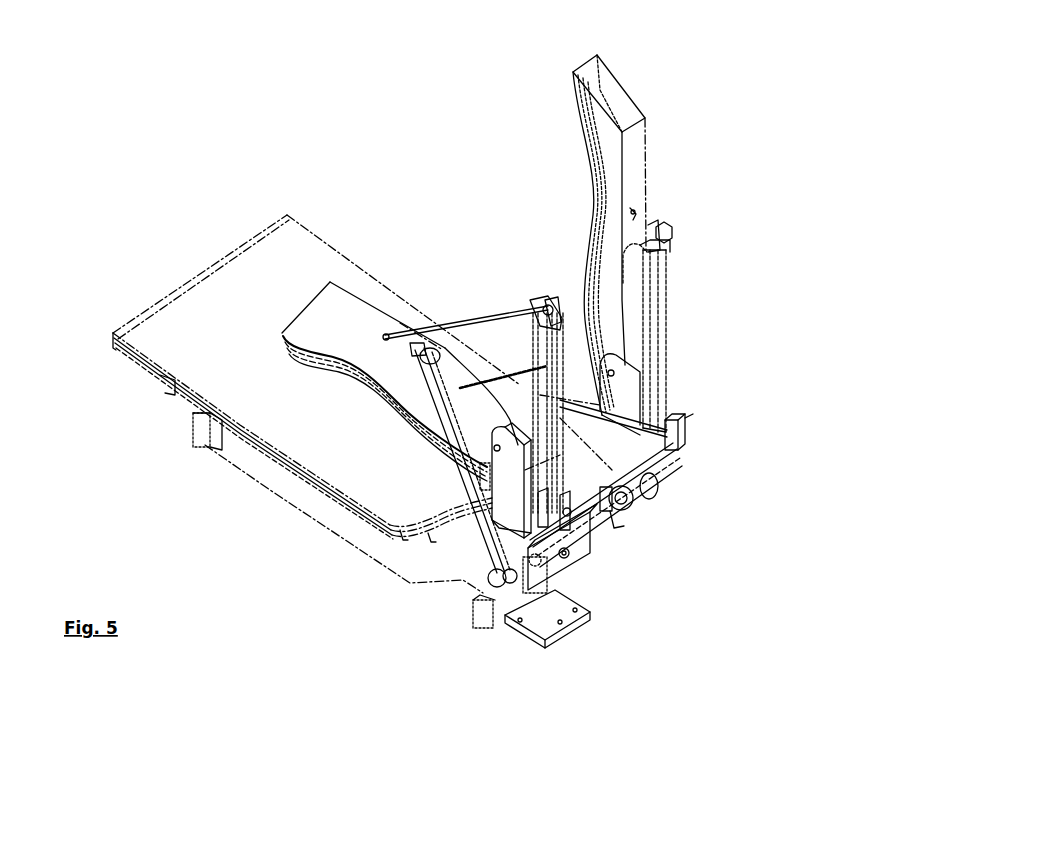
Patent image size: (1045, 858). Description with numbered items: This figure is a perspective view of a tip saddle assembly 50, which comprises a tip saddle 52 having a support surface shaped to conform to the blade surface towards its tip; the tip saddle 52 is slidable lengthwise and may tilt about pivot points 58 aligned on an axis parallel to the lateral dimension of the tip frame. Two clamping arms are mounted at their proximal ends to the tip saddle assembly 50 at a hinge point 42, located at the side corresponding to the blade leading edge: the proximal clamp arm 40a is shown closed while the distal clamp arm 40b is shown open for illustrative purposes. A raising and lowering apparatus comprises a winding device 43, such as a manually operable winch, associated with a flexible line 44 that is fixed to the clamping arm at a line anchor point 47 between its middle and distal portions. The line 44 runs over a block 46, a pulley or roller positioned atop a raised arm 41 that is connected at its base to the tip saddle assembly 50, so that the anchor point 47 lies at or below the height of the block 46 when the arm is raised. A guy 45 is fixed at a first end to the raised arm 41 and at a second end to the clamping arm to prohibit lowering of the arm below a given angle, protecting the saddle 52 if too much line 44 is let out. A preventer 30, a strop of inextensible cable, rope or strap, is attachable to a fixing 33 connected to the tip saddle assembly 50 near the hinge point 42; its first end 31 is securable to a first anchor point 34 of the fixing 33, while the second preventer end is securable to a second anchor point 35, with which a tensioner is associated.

The tip saddle assembly 50 is at (220, 122).
The tip saddle 52 is at (213, 324).
The proximal clamping arm 40a is at (320, 298).
The distal clamping arm 40b is at (633, 165).
The flexible line 44 is at (451, 335).
The guy 45 is at (514, 372).
The line anchor point 47 is at (640, 217).
The block 46 is at (668, 235).
The raised arm 41 is at (668, 273).
The hinge point 42 is at (510, 443).
The winding device 43 is at (676, 438).
The preventer fixing 33 is at (638, 497).
The preventer 30 is at (487, 477).
The pivot points 58 is at (567, 553).
The second anchor point 35 is at (530, 590).
The first end 31 is at (482, 530).
The first anchor point 34 is at (500, 592).